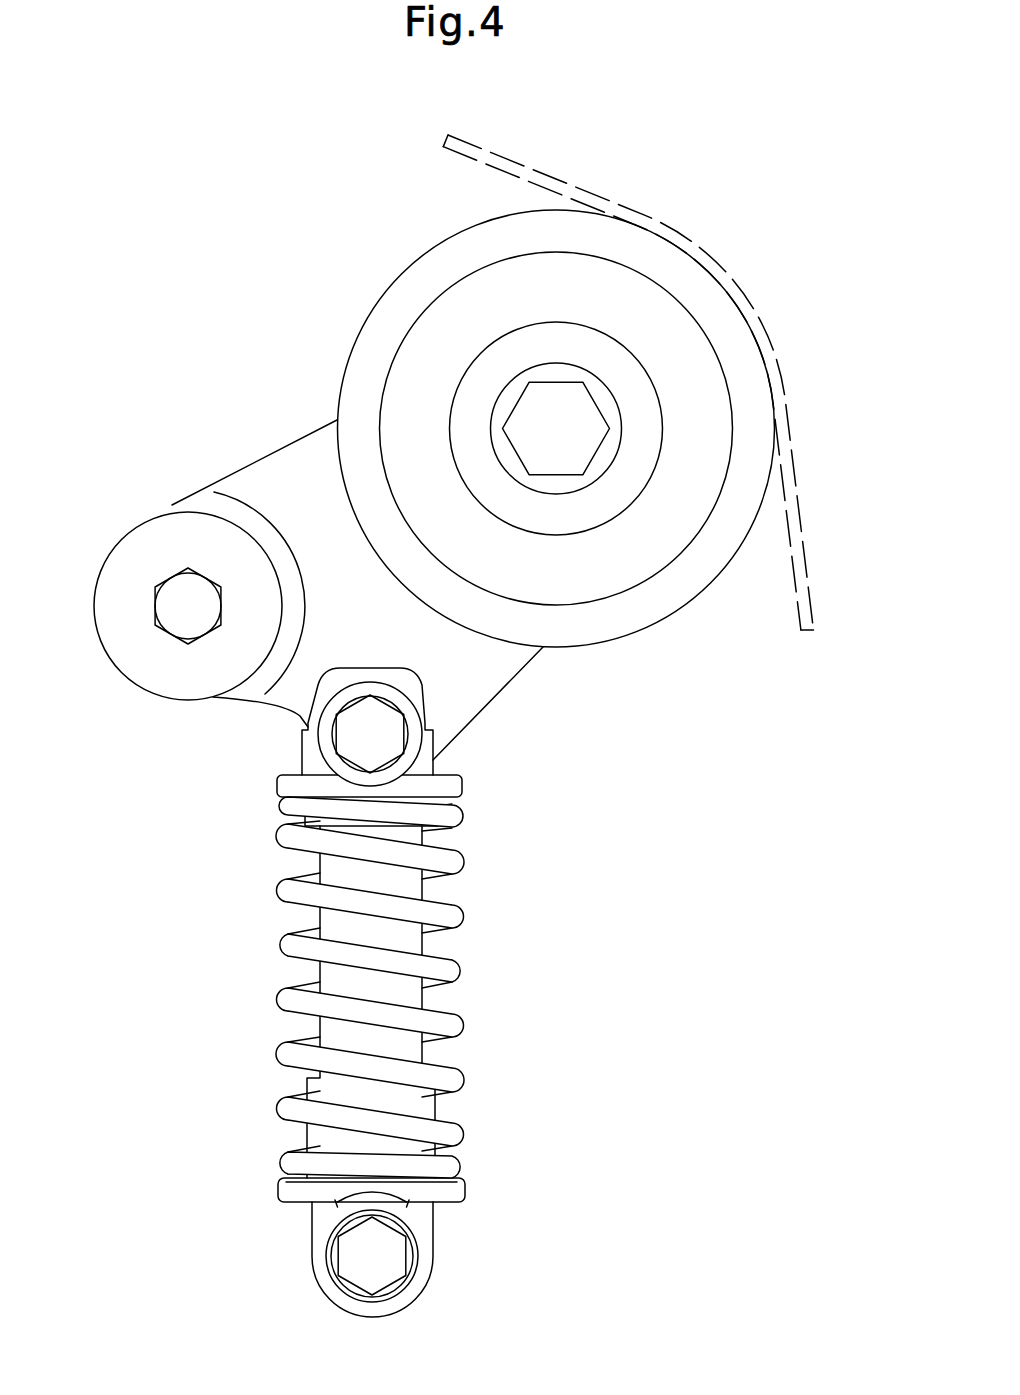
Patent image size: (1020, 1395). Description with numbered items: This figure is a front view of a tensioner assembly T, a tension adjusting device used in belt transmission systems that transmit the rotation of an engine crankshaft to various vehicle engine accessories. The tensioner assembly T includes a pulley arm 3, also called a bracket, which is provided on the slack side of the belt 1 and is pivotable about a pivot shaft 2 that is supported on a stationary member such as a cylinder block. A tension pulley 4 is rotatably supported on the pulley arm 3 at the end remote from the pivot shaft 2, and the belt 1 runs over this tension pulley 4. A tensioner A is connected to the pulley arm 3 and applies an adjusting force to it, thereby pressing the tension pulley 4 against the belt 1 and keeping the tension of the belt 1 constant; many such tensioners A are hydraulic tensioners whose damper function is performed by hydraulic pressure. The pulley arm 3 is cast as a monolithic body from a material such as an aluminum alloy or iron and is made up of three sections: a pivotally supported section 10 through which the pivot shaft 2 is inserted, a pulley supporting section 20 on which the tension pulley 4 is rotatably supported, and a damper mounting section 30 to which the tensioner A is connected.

The belt 1 is at (603, 200).
The pivot shaft 2 is at (147, 557).
The pulley arm 3 is at (277, 473).
The tension pulley 4 is at (378, 334).
The pivotally supported section 10 is at (170, 485).
The pulley supporting section 20 is at (503, 347).
The damper mounting section 30 is at (449, 721).
The tensioner A is at (256, 943).
The tensioner assembly T is at (630, 694).